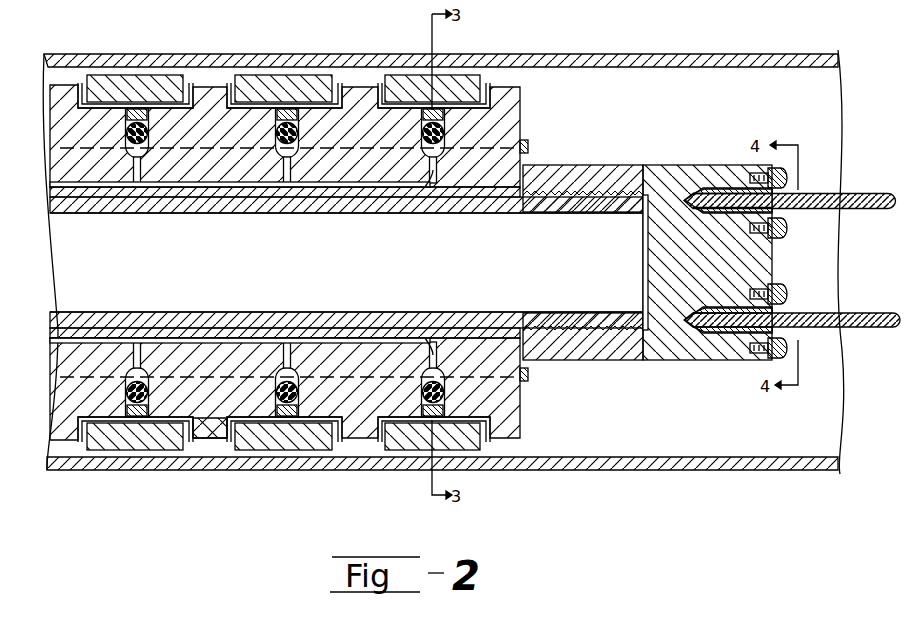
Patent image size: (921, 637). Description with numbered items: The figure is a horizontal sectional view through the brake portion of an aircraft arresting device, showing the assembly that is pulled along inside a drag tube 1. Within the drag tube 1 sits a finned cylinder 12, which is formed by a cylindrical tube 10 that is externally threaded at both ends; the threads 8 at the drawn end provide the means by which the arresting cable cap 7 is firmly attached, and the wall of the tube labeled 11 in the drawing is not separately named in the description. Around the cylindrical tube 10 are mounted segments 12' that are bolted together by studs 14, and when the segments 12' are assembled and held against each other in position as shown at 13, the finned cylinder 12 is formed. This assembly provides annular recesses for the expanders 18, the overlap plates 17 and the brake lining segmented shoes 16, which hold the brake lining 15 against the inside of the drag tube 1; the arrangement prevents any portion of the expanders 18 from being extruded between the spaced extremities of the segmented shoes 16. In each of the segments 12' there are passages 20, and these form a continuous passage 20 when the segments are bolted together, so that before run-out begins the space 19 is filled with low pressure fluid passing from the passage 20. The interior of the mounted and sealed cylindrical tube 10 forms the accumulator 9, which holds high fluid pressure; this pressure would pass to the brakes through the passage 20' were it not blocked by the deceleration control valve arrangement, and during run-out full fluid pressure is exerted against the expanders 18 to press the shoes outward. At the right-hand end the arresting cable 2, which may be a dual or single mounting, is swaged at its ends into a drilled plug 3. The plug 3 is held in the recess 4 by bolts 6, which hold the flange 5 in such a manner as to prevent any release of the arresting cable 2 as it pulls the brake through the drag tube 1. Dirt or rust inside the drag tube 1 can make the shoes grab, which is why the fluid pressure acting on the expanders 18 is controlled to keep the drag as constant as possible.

The drag tube 1 is at (153, 58).
The arresting cable 2 is at (868, 196).
The drilled plug 3 is at (703, 338).
The recess 4 is at (695, 336).
The flange 5 is at (775, 292).
The bolts 6 is at (788, 296).
The arresting cable cap 7 is at (629, 350).
The threads 8 is at (584, 350).
The accumulator 9 is at (124, 275).
The cylindrical tube 10 is at (548, 313).
The upper inner tube 11 is at (529, 176).
The finned cylinder 12 is at (304, 235).
The segments 12' is at (283, 461).
The segment abutment 13 is at (312, 187).
The studs 14 is at (529, 147).
The brake lining 15 is at (440, 76).
The brake lining segmented shoes 16 is at (516, 100).
The overlap plates 17 is at (298, 131).
The expanders 18 is at (148, 133).
The space 19 is at (298, 157).
The passages 20 is at (240, 355).
The passage 20' is at (240, 170).